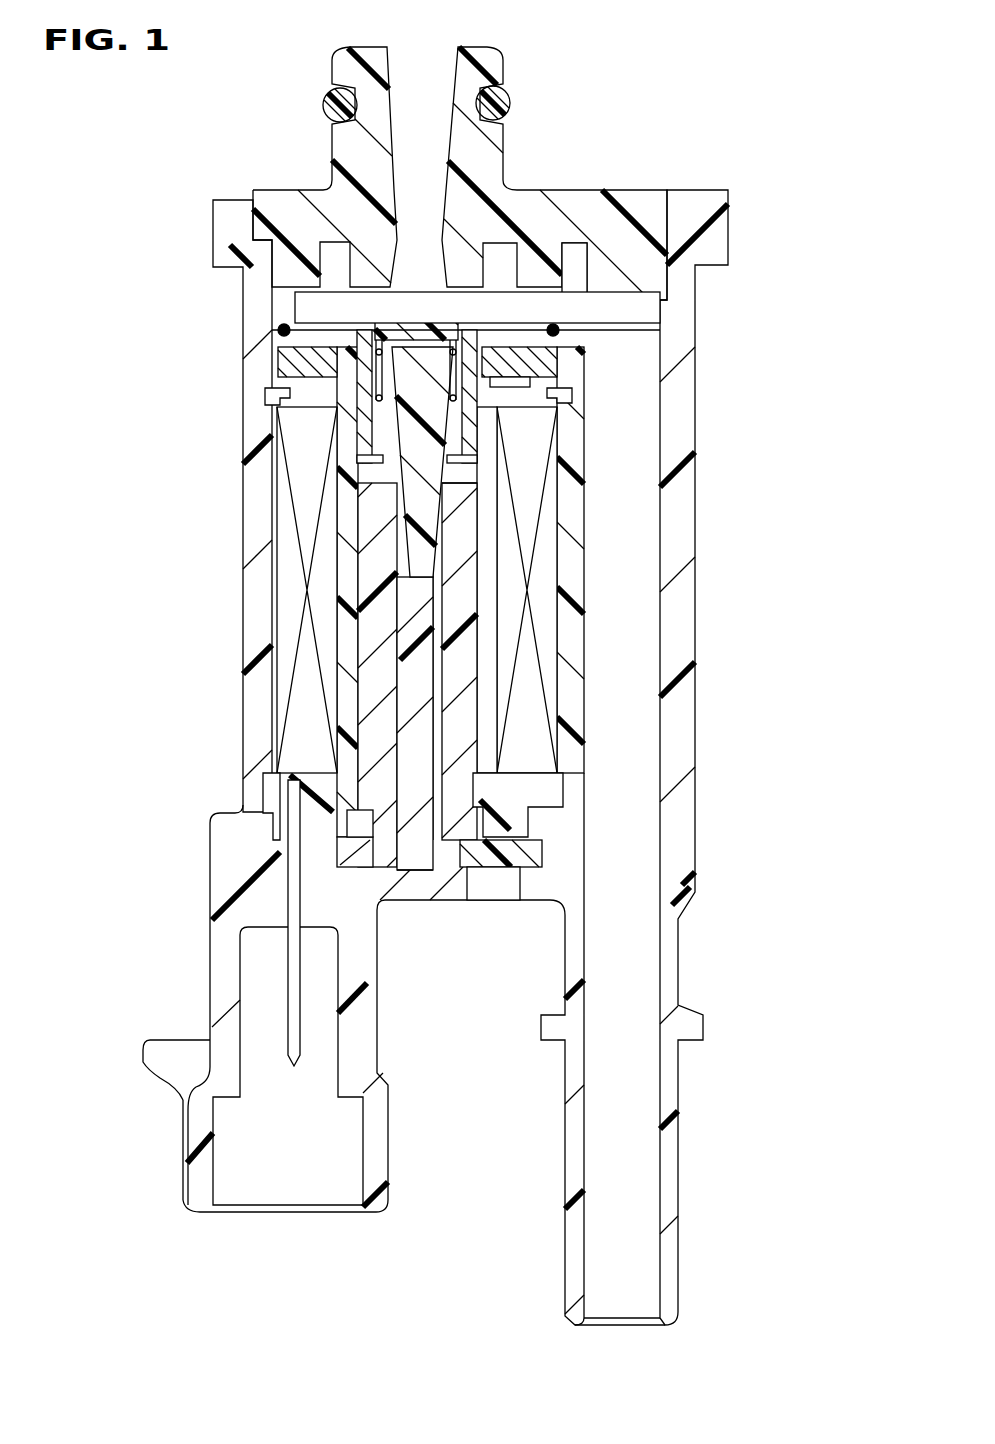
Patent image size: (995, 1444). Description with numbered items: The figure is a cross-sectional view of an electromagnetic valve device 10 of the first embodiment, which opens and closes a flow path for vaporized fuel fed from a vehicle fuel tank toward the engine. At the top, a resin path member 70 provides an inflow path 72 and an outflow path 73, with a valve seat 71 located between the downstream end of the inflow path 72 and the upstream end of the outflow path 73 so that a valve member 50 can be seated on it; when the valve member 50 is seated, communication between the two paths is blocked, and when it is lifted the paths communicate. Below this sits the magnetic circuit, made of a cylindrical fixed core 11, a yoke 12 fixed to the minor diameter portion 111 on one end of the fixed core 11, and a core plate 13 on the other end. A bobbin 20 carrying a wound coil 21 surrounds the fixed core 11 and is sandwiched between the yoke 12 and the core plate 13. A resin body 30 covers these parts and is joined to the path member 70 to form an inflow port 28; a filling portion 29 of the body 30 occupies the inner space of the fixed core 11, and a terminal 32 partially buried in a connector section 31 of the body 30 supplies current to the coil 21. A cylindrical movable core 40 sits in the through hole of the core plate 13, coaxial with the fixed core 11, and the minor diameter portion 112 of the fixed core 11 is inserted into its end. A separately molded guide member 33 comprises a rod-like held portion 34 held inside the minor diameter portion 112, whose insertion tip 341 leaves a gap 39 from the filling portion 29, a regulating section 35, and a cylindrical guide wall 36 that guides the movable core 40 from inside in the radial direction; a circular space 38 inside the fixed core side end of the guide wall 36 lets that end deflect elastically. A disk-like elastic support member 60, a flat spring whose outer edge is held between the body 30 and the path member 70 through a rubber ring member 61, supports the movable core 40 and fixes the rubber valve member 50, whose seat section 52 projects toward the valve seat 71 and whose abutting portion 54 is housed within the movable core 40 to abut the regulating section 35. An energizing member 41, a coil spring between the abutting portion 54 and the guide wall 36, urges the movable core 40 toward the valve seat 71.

The electromagnetic valve device 10 is at (503, 58).
The fixed core 11 is at (330, 632).
The yoke 12 is at (535, 857).
The core plate 13 is at (290, 362).
The bobbin 20 is at (487, 543).
The coil 21 is at (548, 518).
The inflow port 28 is at (640, 1270).
The filling portion 29 is at (425, 645).
The body 30 is at (398, 890).
The connector section 31 is at (195, 1133).
The terminal 32 is at (293, 1045).
The guide member 33 is at (555, 413).
The held portion 34 is at (350, 522).
The regulating section 35 is at (663, 375).
The guide wall 36 is at (370, 453).
The space 38 is at (365, 467).
The gap 39 is at (425, 600).
The movable core 40 is at (395, 405).
The energizing member 41 is at (565, 395).
The valve member 50 is at (520, 297).
The seat section 52 is at (455, 300).
The abutting portion 54 is at (278, 331).
The elastic support member 60 is at (458, 318).
The rubber ring member 61 is at (560, 335).
The path member 70 is at (667, 193).
The valve seat 71 is at (330, 200).
The inflow path 72 is at (568, 250).
The outflow path 73 is at (390, 52).
The minor diameter portion 111 is at (445, 870).
The minor diameter portion 112 is at (450, 470).
The insertion tip 341 is at (380, 590).